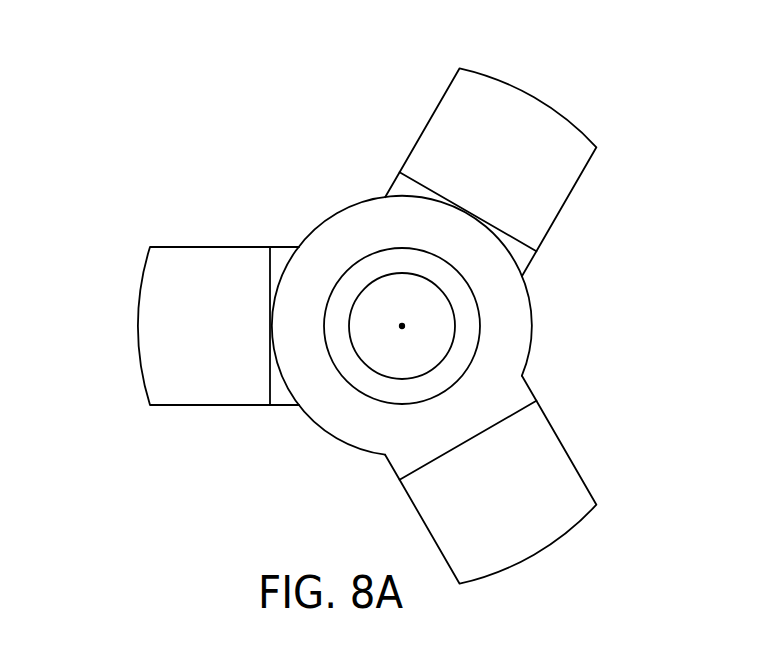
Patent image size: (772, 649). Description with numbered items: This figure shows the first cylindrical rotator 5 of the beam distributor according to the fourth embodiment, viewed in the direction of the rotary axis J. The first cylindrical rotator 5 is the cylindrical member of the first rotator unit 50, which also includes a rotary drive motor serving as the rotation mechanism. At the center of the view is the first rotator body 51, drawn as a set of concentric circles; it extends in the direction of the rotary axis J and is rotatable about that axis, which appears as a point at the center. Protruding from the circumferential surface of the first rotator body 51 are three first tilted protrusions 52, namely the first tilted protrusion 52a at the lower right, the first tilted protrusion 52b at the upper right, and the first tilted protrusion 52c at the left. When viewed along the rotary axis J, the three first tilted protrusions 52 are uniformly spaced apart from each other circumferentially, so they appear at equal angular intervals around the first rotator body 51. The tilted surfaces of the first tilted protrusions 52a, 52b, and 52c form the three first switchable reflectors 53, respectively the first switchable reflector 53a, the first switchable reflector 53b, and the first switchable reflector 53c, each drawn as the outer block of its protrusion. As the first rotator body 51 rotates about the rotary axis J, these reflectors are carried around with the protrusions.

The first cylindrical rotator 5 is at (390, 319).
The first rotator unit 50 is at (630, 200).
The first rotator body 51 is at (328, 217).
The first tilted protrusions 52 is at (375, 319).
The first tilted protrusion 52a is at (549, 499).
The first tilted protrusion 52b is at (507, 146).
The first tilted protrusion 52c is at (168, 367).
The first switchable reflectors 53 is at (375, 319).
The first switchable reflector 53a is at (527, 532).
The first switchable reflector 53b is at (517, 115).
The first switchable reflector 53c is at (162, 332).
The rotary axis J is at (402, 326).